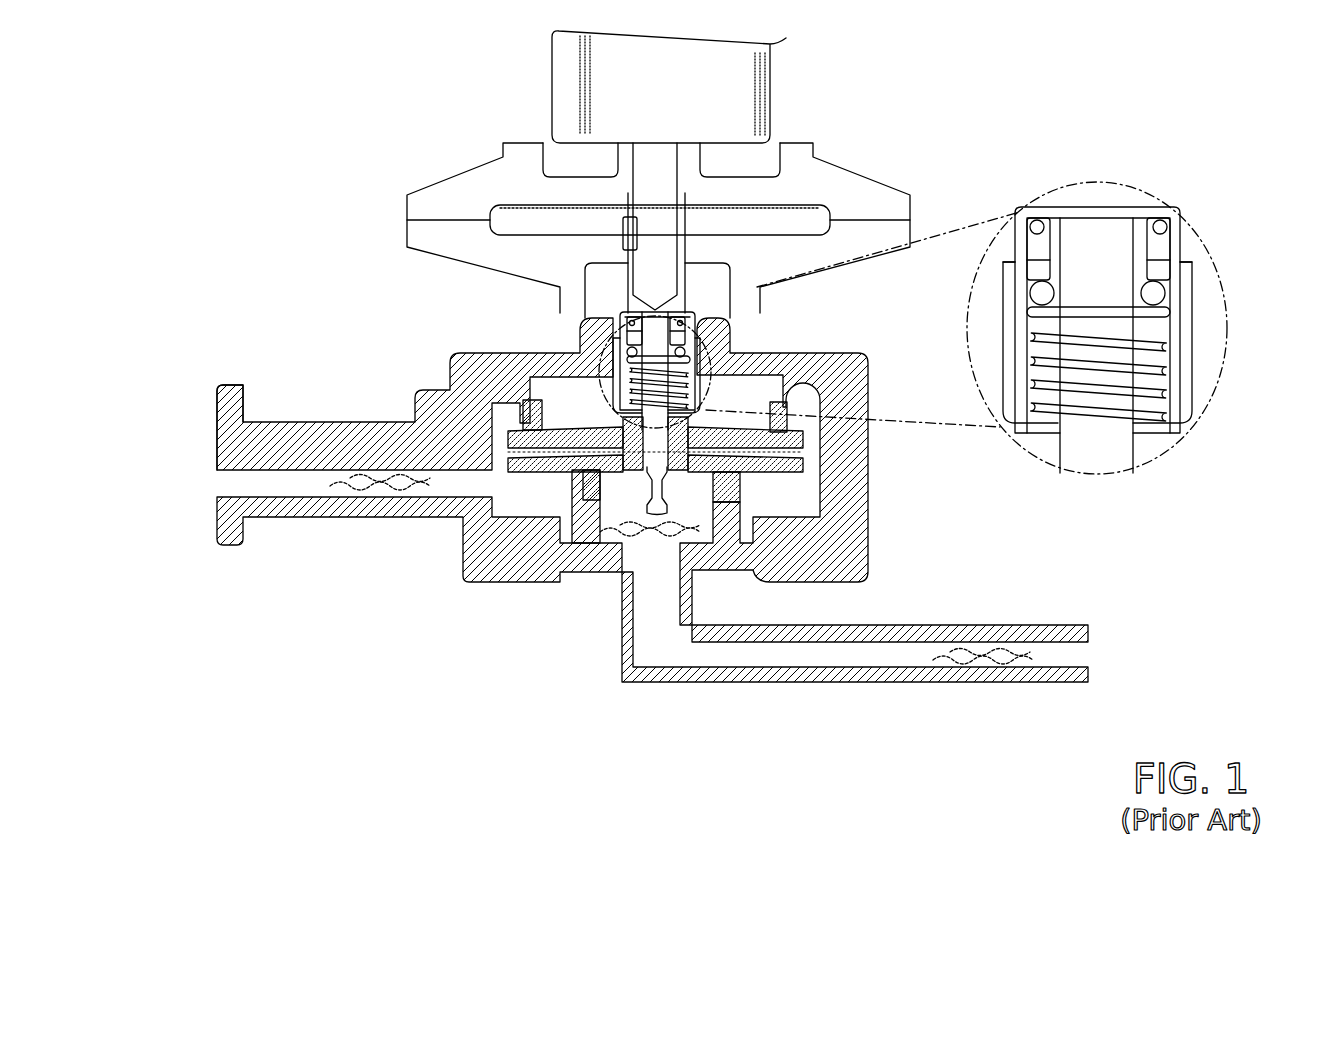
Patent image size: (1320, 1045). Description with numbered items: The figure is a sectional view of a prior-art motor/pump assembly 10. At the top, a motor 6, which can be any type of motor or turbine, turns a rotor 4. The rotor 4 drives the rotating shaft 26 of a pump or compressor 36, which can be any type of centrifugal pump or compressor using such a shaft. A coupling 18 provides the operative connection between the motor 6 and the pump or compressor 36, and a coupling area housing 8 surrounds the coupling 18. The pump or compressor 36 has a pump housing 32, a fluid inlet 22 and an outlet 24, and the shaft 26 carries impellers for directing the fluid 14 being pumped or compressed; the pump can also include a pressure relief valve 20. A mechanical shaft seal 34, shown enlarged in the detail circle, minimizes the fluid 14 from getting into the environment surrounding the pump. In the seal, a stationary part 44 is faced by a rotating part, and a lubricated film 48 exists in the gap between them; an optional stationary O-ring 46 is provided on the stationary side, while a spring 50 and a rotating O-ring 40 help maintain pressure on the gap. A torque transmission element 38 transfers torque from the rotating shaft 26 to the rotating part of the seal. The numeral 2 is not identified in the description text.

The adjustment nut 2 is at (628, 232).
The rotor 4 is at (655, 286).
The motor 6 is at (669, 87).
The coupling area housing 8 is at (452, 178).
The motor/pump assembly 10 is at (310, 152).
The fluid 14 is at (657, 528).
The coupling 18 is at (633, 313).
The pressure relief valve 20 is at (592, 374).
The fluid inlet 22 is at (1070, 657).
The outlet 24 is at (222, 487).
The rotating shaft 26 is at (655, 457).
The pump housing 32 is at (430, 413).
The mechanical shaft seal 34 is at (1070, 182).
The pump or compressor 36 is at (215, 395).
The torque transmission element 38 is at (1182, 433).
The rotating O-ring 40 is at (1152, 290).
The stationary part 44 is at (1150, 268).
The stationary O-ring 46 is at (1165, 228).
The lubricated film 48 is at (1040, 245).
The spring 50 is at (1160, 346).